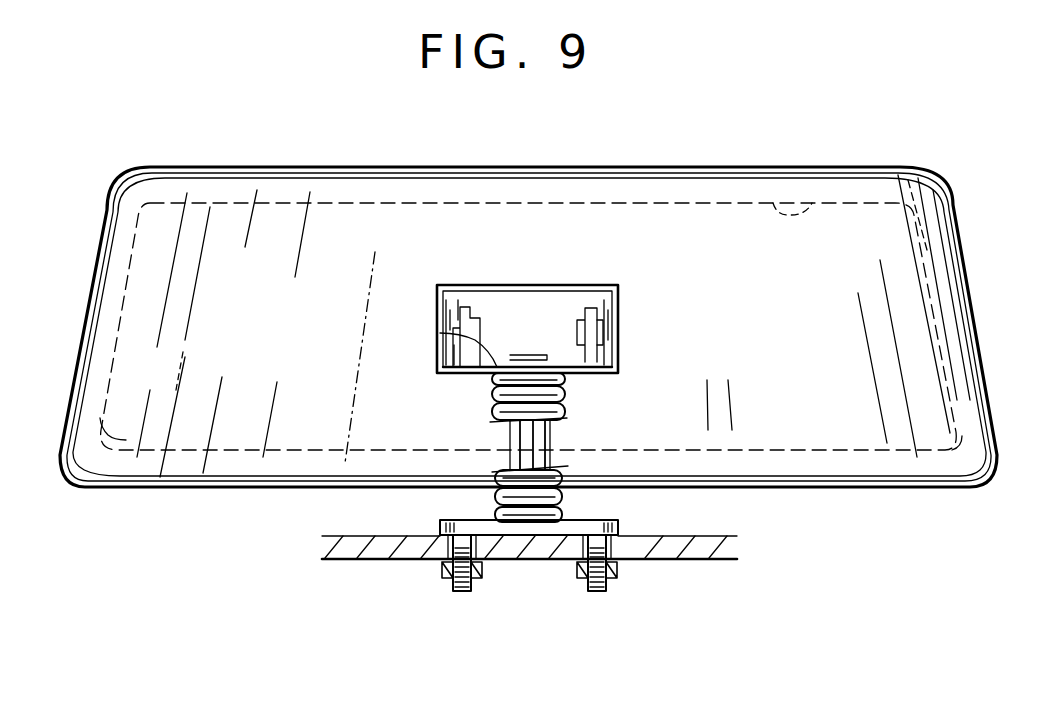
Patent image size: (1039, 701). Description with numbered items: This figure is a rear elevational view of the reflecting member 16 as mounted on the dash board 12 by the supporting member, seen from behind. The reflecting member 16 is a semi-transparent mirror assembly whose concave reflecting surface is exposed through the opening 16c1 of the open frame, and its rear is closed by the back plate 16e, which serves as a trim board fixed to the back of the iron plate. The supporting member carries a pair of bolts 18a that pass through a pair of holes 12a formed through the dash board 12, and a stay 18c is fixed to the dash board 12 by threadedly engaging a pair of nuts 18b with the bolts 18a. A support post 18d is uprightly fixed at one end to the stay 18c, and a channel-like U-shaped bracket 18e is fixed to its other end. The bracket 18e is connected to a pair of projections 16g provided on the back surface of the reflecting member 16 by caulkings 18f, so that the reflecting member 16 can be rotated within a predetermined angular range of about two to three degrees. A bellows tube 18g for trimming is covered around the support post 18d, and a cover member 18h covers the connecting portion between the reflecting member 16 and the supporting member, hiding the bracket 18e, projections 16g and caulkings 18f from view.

The dash board 12 is at (342, 550).
The holes 12a is at (470, 577).
The reflecting member 16 is at (972, 307).
The opening 16c1 is at (808, 203).
The back plate 16e is at (873, 468).
The projections 16g is at (590, 287).
The bolts 18a is at (457, 590).
The nuts 18b is at (438, 568).
The stay 18c is at (620, 525).
The support post 18d is at (497, 427).
The U-shaped bracket 18e is at (595, 330).
The caulkings 18f is at (605, 325).
The bellows tube 18g is at (563, 500).
The cover member 18h is at (470, 285).